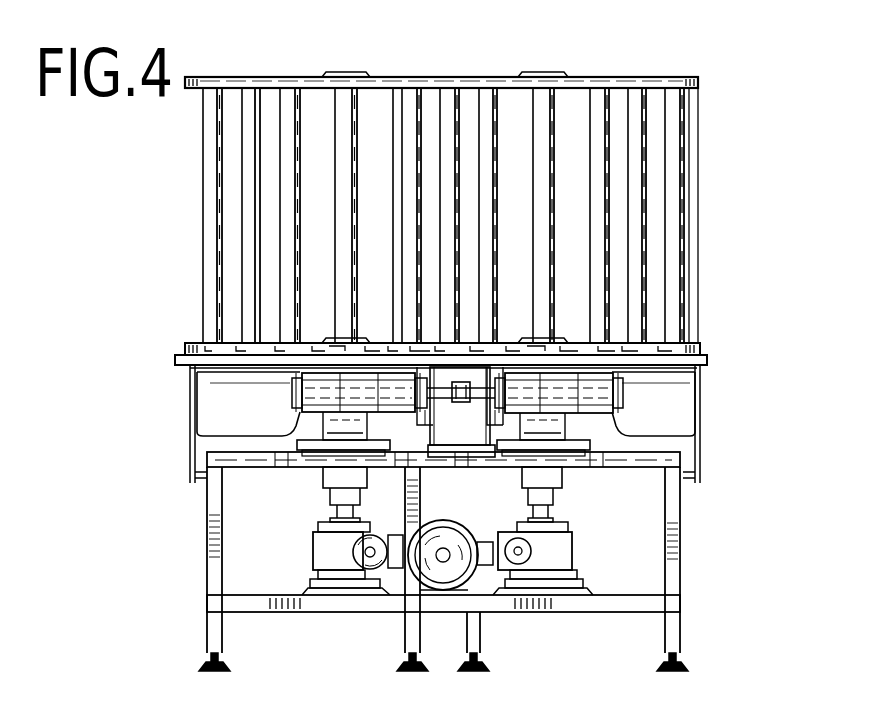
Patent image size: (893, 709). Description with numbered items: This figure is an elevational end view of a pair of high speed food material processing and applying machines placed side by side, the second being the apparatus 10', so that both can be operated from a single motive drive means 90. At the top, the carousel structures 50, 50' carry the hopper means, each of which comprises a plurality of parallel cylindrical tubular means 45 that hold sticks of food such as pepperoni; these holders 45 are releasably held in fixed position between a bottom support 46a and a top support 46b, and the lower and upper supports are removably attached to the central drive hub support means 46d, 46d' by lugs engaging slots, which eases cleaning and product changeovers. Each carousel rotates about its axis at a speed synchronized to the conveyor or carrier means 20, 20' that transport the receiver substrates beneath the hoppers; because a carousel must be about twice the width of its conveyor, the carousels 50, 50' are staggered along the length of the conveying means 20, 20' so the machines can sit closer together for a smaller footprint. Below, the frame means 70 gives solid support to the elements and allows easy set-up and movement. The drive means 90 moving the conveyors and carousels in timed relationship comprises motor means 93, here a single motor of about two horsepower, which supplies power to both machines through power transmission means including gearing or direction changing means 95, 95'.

The food material processing and applying apparatus 10' is at (456, 346).
The conveyor or carrier means 20 is at (277, 414).
The conveyor or carrier means 20' is at (627, 414).
The cylindrical tubular means 45 is at (250, 167).
The bottom support 46a is at (701, 353).
The top support 46b is at (700, 89).
The central drive hub support means 46d is at (367, 188).
The central drive hub support means 46d' is at (517, 188).
The carousel structure 50 is at (279, 183).
The carousel structure 50' is at (569, 182).
The frame means 70 is at (683, 578).
The drive means 90 is at (313, 556).
The motor means 93 is at (475, 502).
The gearing or direction changing means 95 is at (356, 494).
The gearing or direction changing means 95' is at (564, 494).